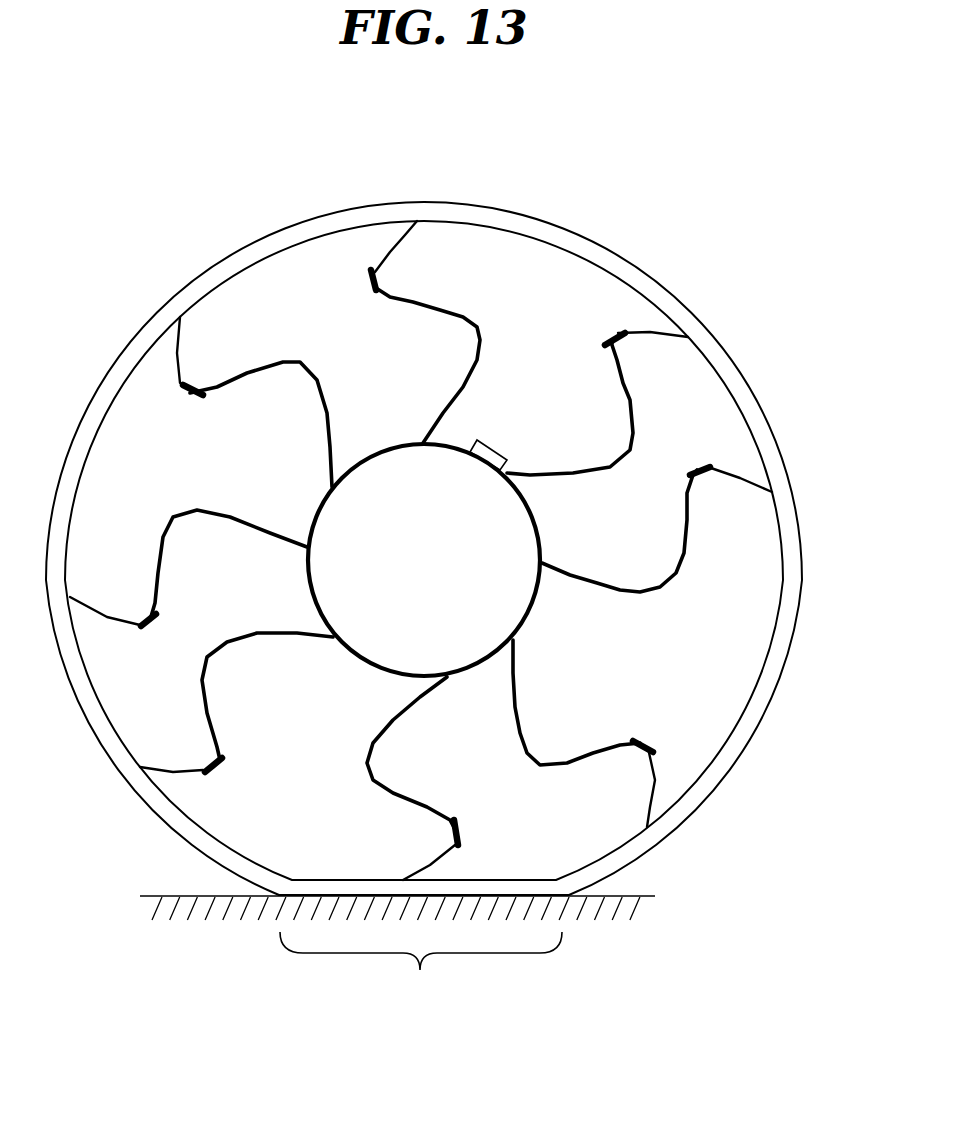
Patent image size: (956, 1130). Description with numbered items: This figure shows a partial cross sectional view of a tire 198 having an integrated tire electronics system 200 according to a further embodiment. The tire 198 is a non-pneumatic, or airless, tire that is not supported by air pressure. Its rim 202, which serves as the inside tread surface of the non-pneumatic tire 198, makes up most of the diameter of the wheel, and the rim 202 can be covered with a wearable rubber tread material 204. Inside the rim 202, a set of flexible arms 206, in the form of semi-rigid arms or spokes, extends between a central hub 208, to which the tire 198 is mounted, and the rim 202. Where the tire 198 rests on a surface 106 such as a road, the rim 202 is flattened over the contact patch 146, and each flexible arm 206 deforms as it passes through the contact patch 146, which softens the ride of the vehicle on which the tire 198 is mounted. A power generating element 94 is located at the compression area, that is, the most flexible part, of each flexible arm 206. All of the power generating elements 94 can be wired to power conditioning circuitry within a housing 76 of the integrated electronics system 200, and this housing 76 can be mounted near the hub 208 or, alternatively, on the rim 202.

The integrated tire electronics system 200 is at (692, 367).
The tire 198 is at (100, 378).
The wearable rubber tread material 204 is at (785, 538).
The rim 202 is at (190, 814).
The hub 208 is at (538, 593).
The housing 76 is at (478, 447).
The flexible arm 206 is at (293, 360).
The power generating element 94 is at (188, 402).
The surface 106 is at (156, 912).
The contact patch 146 is at (420, 970).